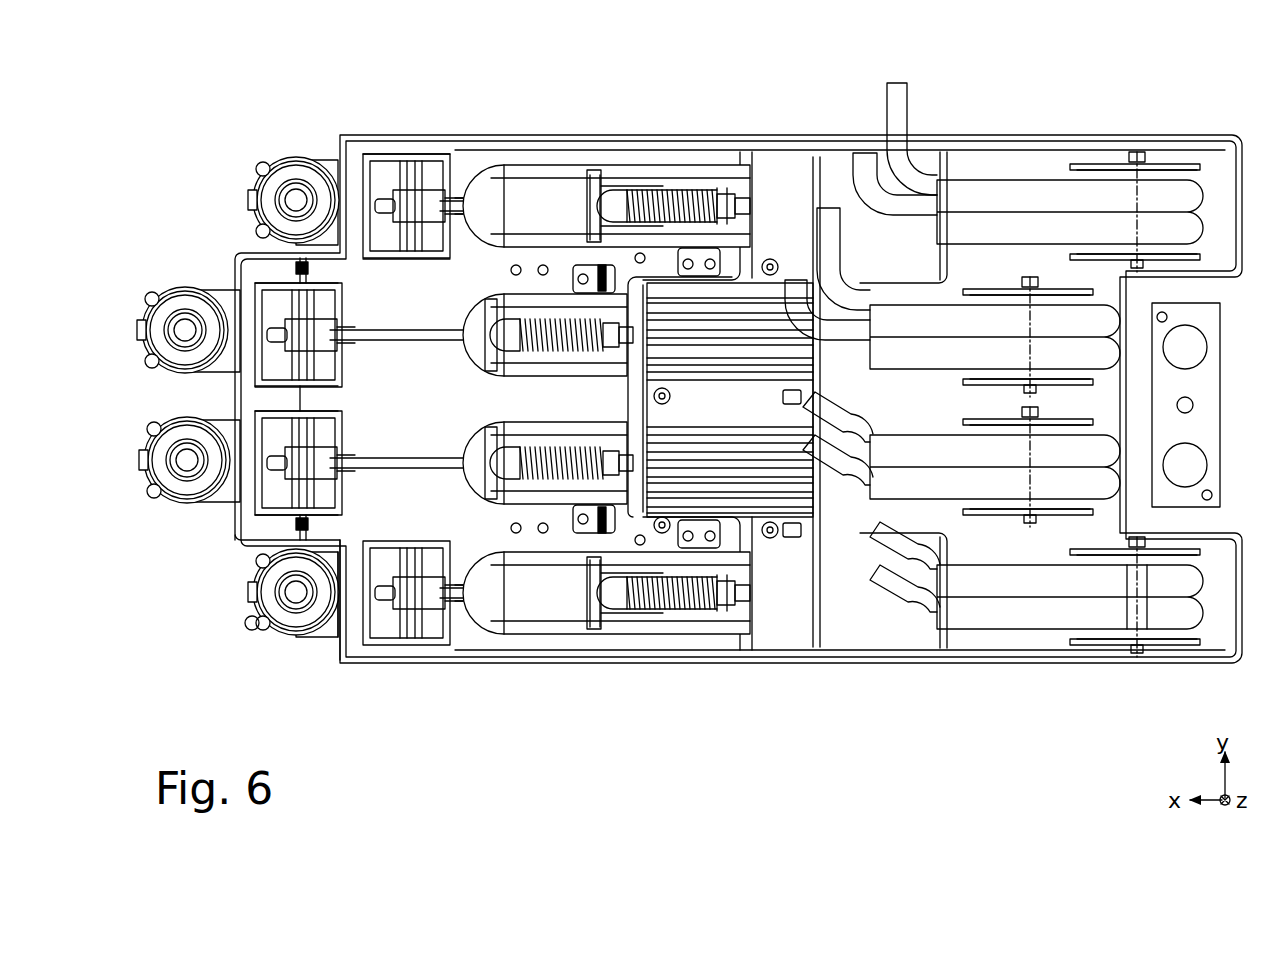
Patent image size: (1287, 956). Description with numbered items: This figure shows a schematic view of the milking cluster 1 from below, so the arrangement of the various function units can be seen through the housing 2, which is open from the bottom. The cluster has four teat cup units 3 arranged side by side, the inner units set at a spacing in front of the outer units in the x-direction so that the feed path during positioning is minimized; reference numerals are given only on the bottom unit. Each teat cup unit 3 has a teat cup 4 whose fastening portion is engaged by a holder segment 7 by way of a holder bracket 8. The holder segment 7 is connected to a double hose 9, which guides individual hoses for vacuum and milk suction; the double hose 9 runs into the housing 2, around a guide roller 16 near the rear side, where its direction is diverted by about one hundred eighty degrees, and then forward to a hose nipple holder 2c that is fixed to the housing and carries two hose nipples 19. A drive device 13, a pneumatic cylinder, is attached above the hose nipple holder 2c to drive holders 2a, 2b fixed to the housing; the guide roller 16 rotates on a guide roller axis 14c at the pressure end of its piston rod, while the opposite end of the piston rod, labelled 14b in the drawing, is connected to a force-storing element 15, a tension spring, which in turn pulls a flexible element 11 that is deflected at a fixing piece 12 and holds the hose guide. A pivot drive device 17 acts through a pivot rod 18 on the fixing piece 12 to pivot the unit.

The milking cluster 1 is at (236, 119).
The housing 2 is at (750, 425).
The drive holder 2a is at (745, 150).
The drive holder 2b is at (951, 168).
The hose nipple holder 2c is at (907, 618).
The teat cup unit 3 is at (227, 198).
The teat cup 4 is at (262, 648).
The holder segment 7 is at (333, 640).
The holder bracket 8 is at (257, 616).
The double hose 9 is at (1207, 600).
The flexible element 11 is at (500, 597).
The fixing piece 12 is at (384, 620).
The drive device 13 is at (790, 628).
The bearing 14b is at (740, 608).
The guide roller axis 14c is at (1137, 603).
The force-storing element 15 is at (672, 612).
The guide roller 16 is at (1180, 641).
The pivot drive device 17 is at (612, 617).
The pivot rod 18 is at (550, 603).
The hose nipples 19 is at (868, 615).